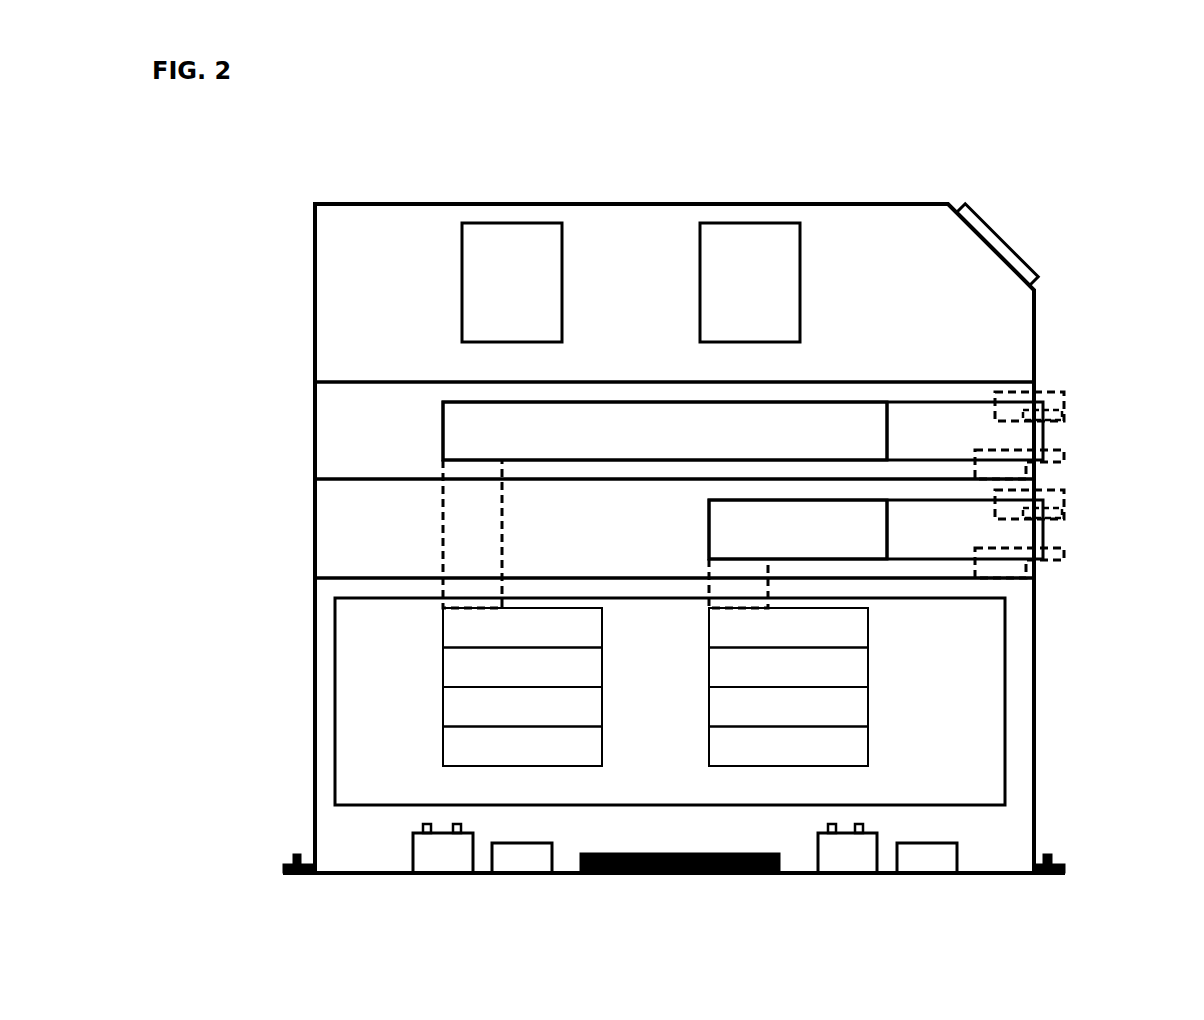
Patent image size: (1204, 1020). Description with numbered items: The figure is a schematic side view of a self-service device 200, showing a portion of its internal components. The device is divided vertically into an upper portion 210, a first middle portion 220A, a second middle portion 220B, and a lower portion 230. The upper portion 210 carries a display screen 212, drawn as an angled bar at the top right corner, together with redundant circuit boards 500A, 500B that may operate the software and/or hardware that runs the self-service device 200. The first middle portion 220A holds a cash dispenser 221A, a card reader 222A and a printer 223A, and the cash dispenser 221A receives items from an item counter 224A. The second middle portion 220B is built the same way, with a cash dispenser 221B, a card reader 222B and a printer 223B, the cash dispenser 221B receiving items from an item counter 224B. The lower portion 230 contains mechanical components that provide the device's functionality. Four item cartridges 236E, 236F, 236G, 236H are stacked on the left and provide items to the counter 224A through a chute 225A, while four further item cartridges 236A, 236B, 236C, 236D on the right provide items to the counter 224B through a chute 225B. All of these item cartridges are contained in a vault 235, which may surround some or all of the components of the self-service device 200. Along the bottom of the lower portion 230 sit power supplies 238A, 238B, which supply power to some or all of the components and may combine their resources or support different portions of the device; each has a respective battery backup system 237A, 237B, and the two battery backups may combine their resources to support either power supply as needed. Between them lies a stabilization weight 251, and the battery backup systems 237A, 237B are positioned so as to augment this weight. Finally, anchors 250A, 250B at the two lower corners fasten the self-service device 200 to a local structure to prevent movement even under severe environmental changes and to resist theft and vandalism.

The self-service device 200 is at (1131, 95).
The upper portion 210 is at (315, 225).
The display screen 212 is at (1015, 258).
The redundant circuit board 500A is at (512, 223).
The redundant circuit board 500B is at (750, 223).
The first middle portion 220A is at (315, 430).
The second middle portion 220B is at (315, 530).
The cash dispenser 221A is at (1043, 431).
The cash dispenser 221B is at (1043, 529).
The card reader 222A is at (1065, 405).
The card reader 222B is at (1065, 503).
The printer 223A is at (1065, 457).
The printer 223B is at (1065, 555).
The item counter 224A is at (443, 432).
The item counter 224B is at (709, 530).
The chute 225A is at (443, 462).
The chute 225B is at (709, 560).
The lower portion 230 is at (315, 785).
The vault 235 is at (1005, 715).
The item cartridge 236A is at (868, 628).
The item cartridge 236B is at (868, 668).
The item cartridge 236C is at (868, 707).
The item cartridge 236D is at (868, 746).
The item cartridge 236E is at (443, 627).
The item cartridge 236F is at (443, 666).
The item cartridge 236G is at (443, 706).
The item cartridge 236H is at (443, 746).
The battery backup system 237A is at (413, 855).
The battery backup system 237B is at (818, 855).
The power supply 238A is at (530, 843).
The power supply 238B is at (928, 843).
The anchor 250A is at (283, 862).
The anchor 250B is at (1065, 862).
The stabilization weight 251 is at (680, 853).